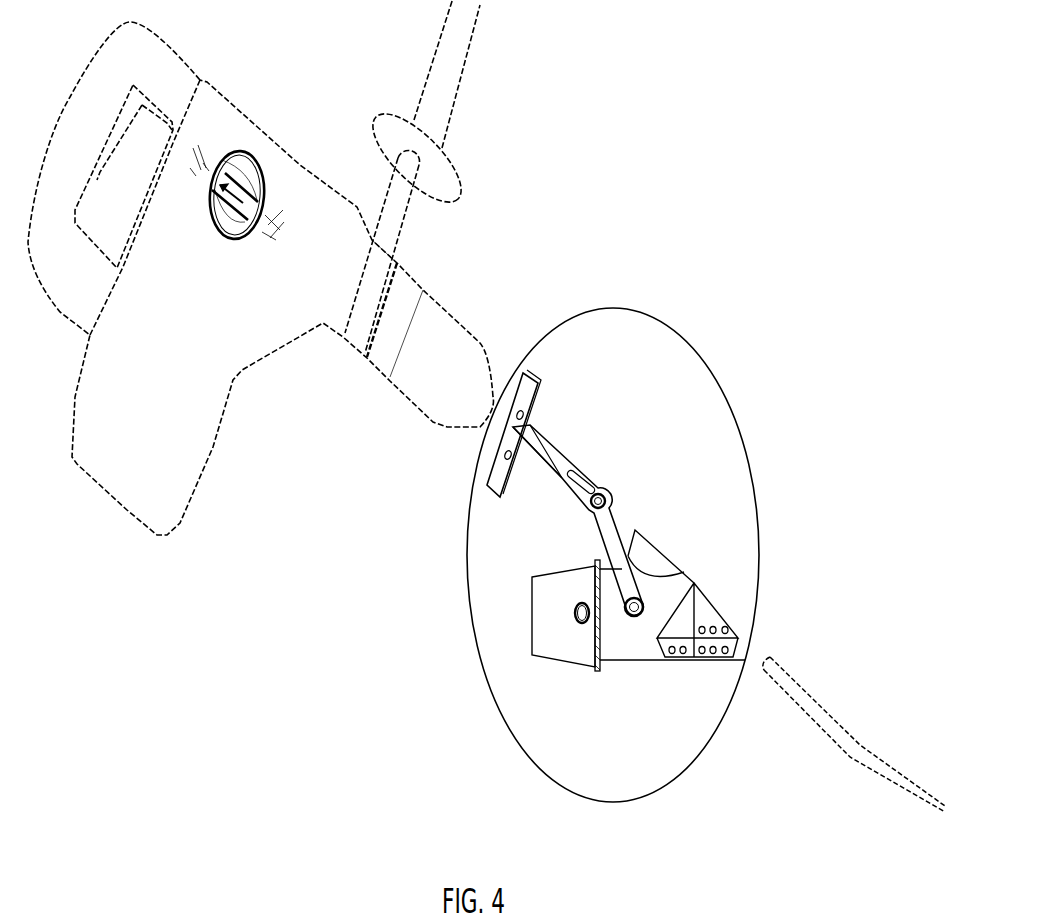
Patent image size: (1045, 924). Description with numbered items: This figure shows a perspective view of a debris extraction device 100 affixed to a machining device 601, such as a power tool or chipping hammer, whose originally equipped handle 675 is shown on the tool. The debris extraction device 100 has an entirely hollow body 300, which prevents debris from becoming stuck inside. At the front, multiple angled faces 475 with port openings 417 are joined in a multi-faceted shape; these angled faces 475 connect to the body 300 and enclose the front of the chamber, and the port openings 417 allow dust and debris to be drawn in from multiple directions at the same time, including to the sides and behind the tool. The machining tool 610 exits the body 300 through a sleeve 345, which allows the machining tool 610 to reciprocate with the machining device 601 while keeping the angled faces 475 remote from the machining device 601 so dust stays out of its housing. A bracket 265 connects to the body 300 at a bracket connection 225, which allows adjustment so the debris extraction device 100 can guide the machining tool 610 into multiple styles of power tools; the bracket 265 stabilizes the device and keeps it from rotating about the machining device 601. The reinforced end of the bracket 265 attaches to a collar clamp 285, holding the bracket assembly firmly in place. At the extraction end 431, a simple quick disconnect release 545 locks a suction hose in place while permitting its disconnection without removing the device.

The machining device 601 is at (308, 245).
The originally equipped handle 675 is at (432, 95).
The body 300 is at (637, 647).
The collar clamp 285 is at (530, 387).
The bracket 265 is at (593, 457).
The bracket connection 225 is at (627, 601).
The sleeve 345 is at (640, 552).
The angled faces 475 is at (704, 628).
The port openings 417 is at (713, 647).
The extraction end 431 is at (553, 633).
The quick disconnect release 545 is at (578, 617).
The debris extraction device 100 is at (618, 623).
The machining tool 610 is at (850, 740).